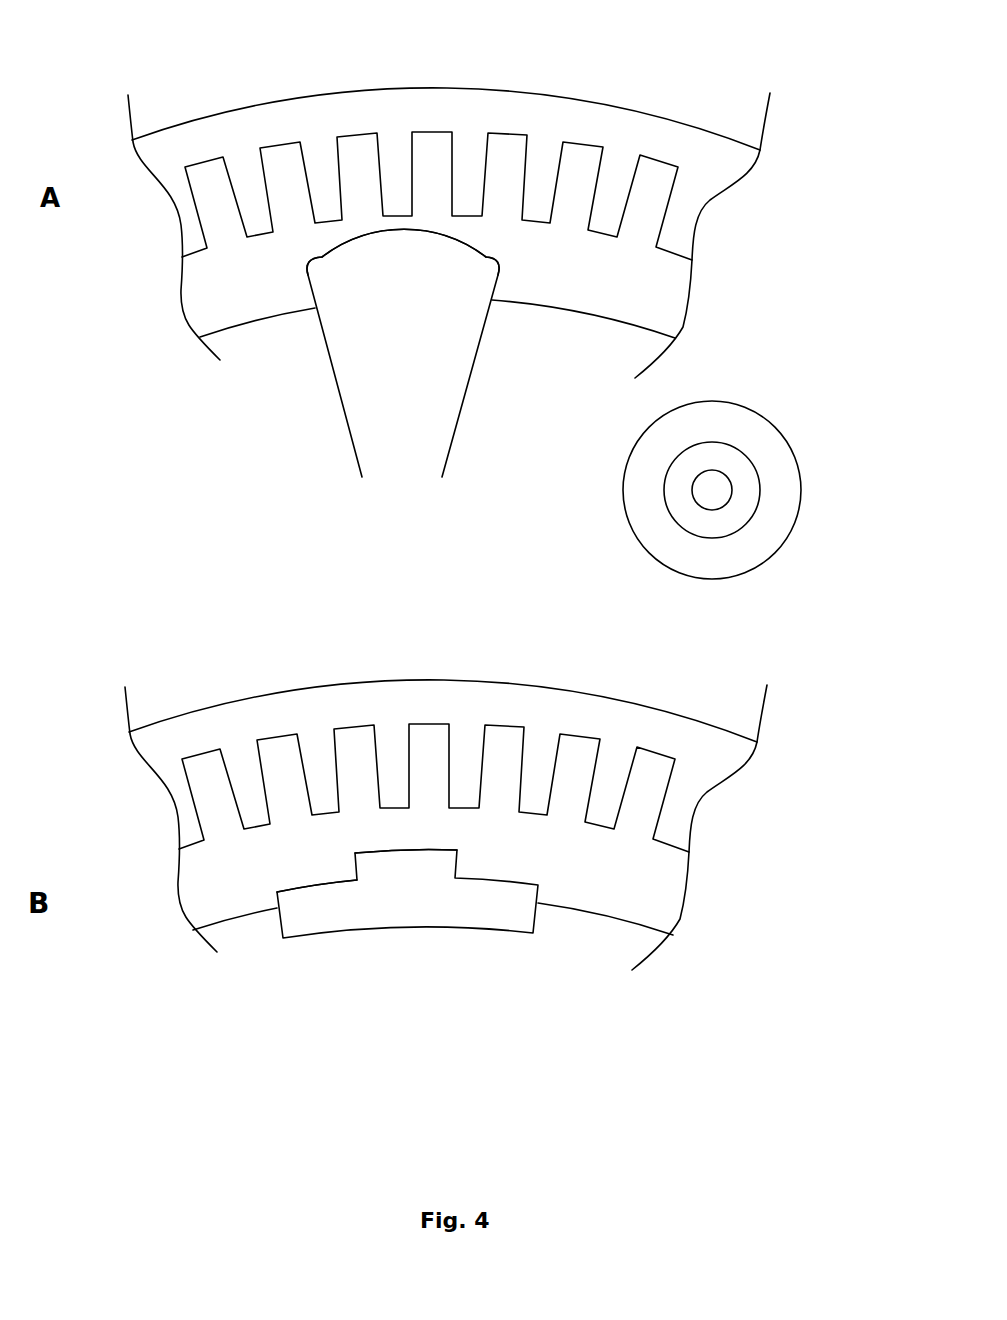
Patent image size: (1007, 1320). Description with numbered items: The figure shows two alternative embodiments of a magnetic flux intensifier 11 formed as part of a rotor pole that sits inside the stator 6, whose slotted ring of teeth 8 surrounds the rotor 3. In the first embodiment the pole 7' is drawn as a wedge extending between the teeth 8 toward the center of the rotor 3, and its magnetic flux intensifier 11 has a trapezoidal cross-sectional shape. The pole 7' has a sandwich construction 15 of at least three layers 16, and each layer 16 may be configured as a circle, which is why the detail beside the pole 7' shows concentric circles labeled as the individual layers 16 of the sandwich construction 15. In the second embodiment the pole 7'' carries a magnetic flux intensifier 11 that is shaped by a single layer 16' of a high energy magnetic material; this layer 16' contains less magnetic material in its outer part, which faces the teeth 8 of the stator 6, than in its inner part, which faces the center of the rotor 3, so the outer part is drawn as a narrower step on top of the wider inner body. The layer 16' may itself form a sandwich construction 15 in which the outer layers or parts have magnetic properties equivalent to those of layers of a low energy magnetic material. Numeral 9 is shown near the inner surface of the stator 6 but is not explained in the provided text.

In FIG. 4A, the stator 6 is at (203, 130).
In FIG. 4B, the stator 6 is at (160, 737).
In FIG. 4A, the teeth 8 is at (470, 158).
In FIG. 4B, the teeth 8 is at (392, 740).
In FIG. 4A, the tooth 9 is at (602, 275).
In FIG. 4B, the tooth 9 is at (570, 862).
In FIG. 4A, the rotor 3 is at (265, 412).
In FIG. 4B, the rotor 3 is at (250, 978).
In FIG. 4A, the pole 7' is at (394, 393).
In FIG. 4B, the pole 7'' is at (390, 975).
In FIG. 4A, the magnetic flux intensifier 11 is at (468, 278).
In FIG. 4B, the magnetic flux intensifier 11 is at (465, 937).
In FIG. 4A, the sandwich construction 15 is at (832, 488).
In FIG. 4A, the layer 16 is at (723, 537).
In FIG. 4B, the layer 16' is at (271, 865).